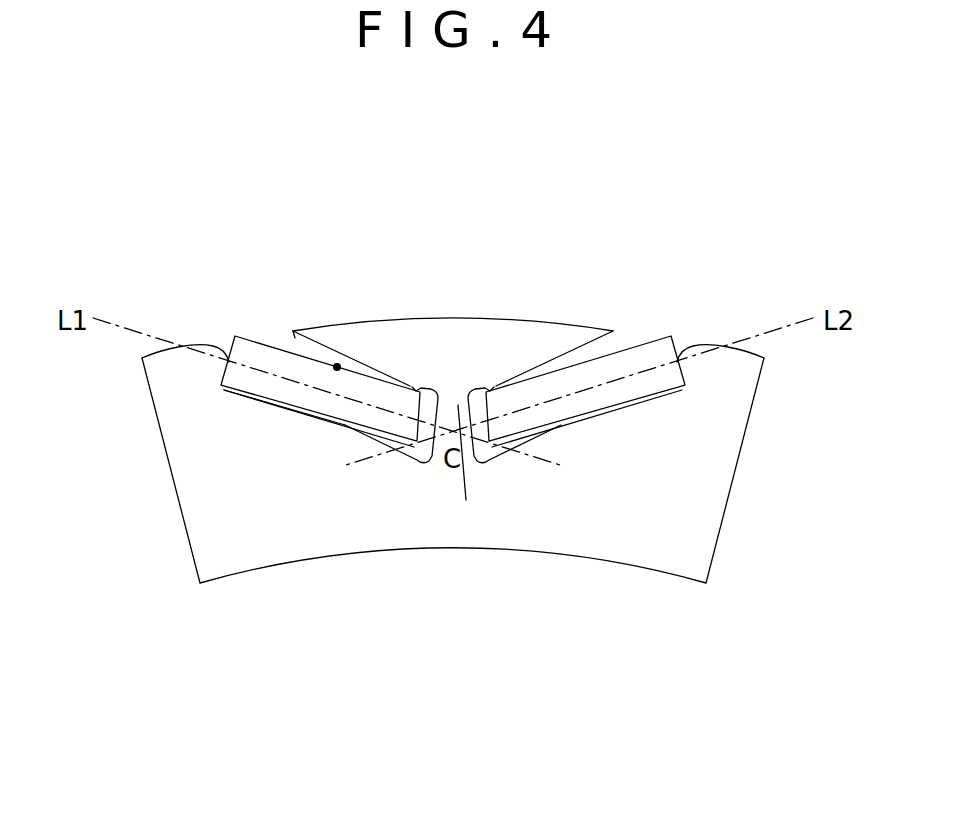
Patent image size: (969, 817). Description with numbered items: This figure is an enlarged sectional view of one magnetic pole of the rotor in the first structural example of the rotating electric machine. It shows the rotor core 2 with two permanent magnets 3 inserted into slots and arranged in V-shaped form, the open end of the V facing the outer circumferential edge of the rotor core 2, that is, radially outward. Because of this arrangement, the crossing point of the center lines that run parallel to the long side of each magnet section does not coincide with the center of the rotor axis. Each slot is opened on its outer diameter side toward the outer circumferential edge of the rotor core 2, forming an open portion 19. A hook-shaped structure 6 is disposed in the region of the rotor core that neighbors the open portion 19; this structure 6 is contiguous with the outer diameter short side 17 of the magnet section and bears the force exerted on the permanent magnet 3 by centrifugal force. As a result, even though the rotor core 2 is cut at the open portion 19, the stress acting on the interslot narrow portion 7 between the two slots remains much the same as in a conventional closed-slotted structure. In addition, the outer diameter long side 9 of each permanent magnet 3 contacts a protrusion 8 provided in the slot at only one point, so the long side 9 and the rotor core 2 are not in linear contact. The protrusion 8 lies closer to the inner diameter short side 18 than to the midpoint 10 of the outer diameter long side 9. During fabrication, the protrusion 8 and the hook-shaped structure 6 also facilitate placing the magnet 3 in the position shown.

The rotor core 2 is at (265, 548).
The permanent magnet 3 is at (265, 360).
The hook-shaped structure 6 is at (213, 357).
The interslot narrow portion 7 is at (466, 500).
The protrusion 8 is at (413, 384).
The outer diameter long side 9 is at (297, 333).
The midpoint 10 is at (337, 365).
The outer diameter short side 17 is at (227, 368).
The inner diameter short side 18 is at (430, 415).
The open portion 19 is at (622, 337).